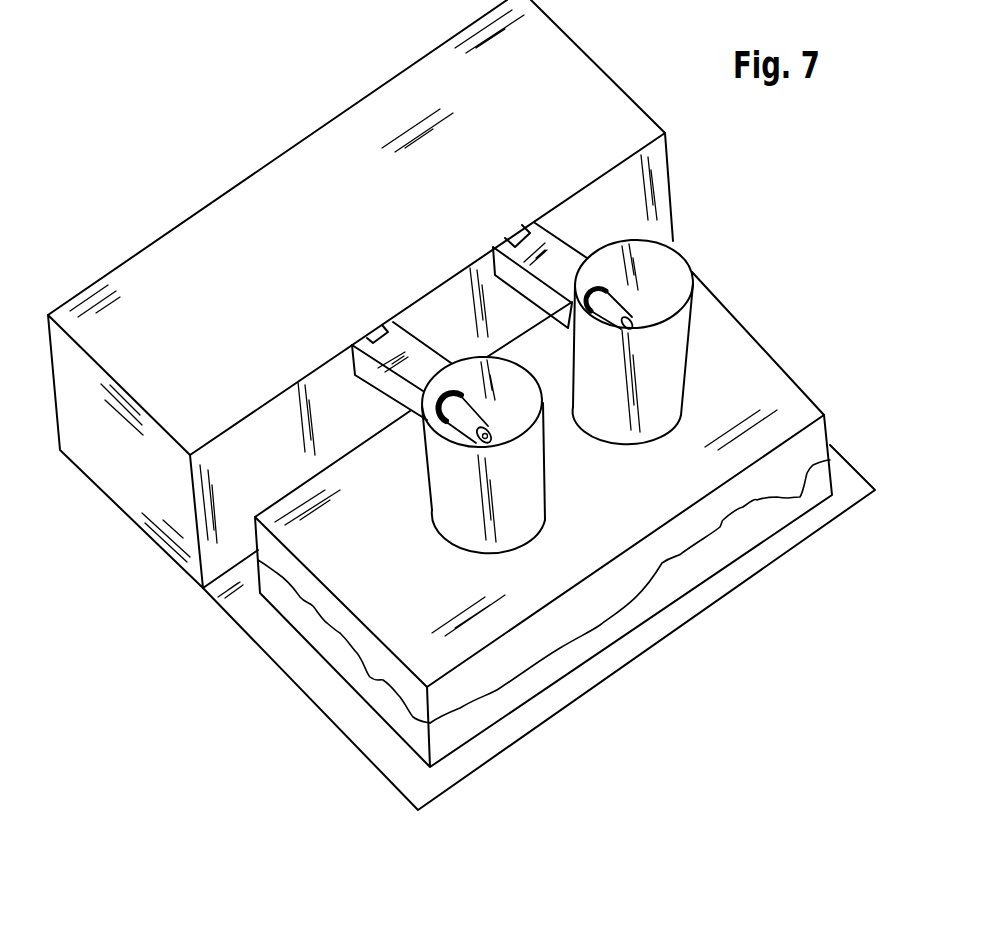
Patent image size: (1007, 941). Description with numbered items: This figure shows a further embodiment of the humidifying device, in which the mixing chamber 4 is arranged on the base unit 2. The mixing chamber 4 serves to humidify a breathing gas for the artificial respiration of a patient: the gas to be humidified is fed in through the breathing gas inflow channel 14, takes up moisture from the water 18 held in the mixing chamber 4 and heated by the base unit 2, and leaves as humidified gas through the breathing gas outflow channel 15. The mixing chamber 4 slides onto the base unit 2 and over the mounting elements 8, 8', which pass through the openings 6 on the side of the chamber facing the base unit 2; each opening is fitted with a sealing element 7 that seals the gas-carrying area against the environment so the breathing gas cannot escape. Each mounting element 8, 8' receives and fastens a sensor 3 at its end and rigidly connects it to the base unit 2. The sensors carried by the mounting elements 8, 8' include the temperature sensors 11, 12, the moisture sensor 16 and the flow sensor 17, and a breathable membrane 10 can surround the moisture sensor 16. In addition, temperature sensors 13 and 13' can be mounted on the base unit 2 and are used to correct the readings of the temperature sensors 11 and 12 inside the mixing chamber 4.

The base unit 2 is at (132, 487).
The sensor 3 is at (591, 322).
The mixing chamber 4 is at (740, 360).
The opening 6 is at (452, 396).
The sealing element 7 is at (446, 268).
The mounting element 8 is at (648, 247).
The mounting element 8' is at (350, 552).
The breathable membrane 10 is at (432, 510).
The temperature sensor 11 is at (632, 316).
The temperature sensor 12 is at (498, 408).
The temperature sensor 13 is at (530, 246).
The temperature sensor 13' is at (314, 371).
The breathing gas inflow channel 14 is at (688, 340).
The breathing gas outflow channel 15 is at (534, 481).
The moisture sensor 16 is at (575, 463).
The flow sensor 17 is at (493, 442).
The water 18 is at (753, 477).